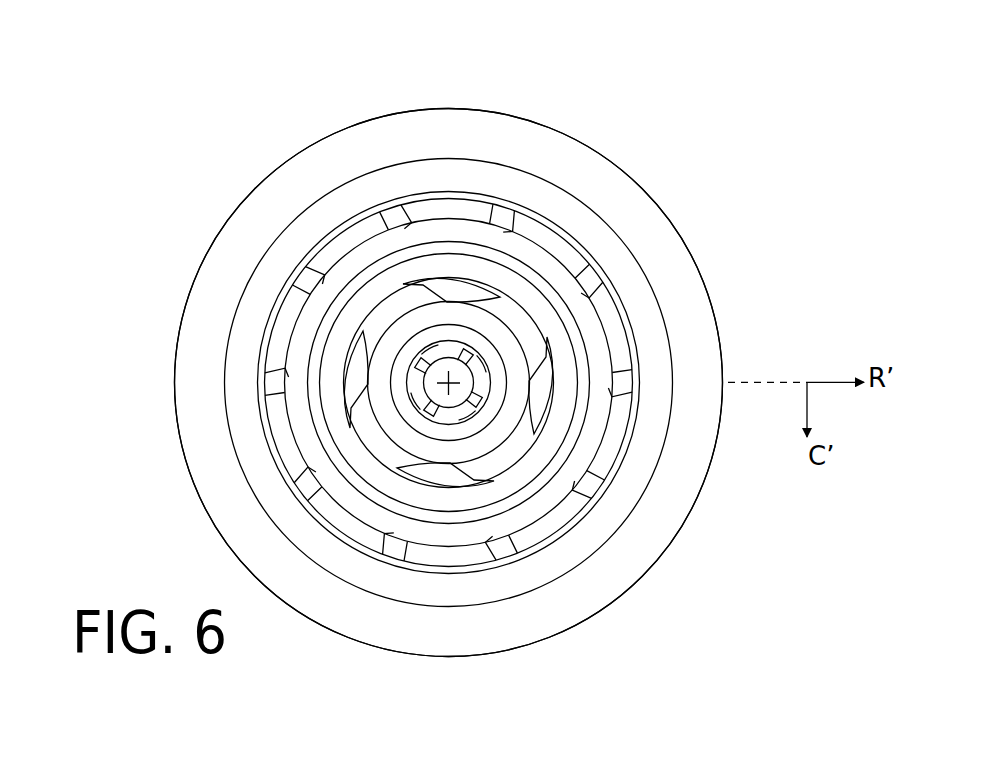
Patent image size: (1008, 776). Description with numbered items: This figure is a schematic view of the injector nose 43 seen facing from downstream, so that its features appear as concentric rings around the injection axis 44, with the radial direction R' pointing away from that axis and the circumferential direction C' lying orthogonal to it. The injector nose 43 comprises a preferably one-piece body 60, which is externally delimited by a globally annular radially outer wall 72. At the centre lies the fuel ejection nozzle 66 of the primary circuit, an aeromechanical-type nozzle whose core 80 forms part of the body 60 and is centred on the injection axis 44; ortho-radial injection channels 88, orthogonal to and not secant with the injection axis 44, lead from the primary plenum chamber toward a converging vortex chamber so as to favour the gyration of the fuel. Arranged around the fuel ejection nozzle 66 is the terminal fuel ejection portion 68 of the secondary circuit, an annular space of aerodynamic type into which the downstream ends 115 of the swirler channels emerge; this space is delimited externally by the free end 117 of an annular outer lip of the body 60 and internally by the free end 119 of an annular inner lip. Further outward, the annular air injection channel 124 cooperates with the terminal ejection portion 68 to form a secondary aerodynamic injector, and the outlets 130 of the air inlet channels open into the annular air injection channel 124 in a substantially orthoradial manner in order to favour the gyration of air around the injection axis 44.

The injector nose 43 is at (693, 160).
The body 60 is at (283, 162).
The radially outer wall 72 is at (700, 270).
The free end 117 is at (580, 222).
The free end 119 is at (522, 268).
The downstream ends 115 is at (625, 388).
The terminal fuel ejection portion 68 is at (601, 455).
The outlets 130 is at (460, 285).
The annular air injection channel 124 is at (520, 443).
The core 80 is at (465, 400).
The injection channels 88 is at (478, 398).
The fuel ejection nozzle 66 is at (408, 407).
The injection axis 44 is at (445, 378).